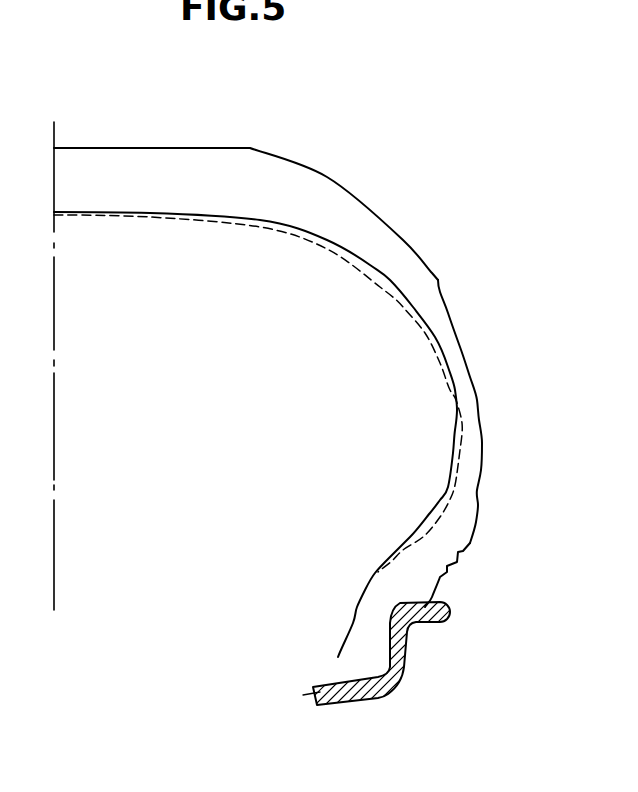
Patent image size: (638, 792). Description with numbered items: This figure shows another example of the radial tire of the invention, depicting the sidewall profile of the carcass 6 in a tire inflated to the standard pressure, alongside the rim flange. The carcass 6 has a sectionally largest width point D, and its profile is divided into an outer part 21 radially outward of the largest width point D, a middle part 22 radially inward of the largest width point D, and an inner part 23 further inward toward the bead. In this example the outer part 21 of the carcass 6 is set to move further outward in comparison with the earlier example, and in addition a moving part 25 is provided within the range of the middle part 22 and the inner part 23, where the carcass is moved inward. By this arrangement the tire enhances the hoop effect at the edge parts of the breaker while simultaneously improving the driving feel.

The carcass 6 is at (370, 265).
The outer part 21 is at (418, 278).
The middle part 22 is at (448, 482).
The inner part 23 is at (365, 590).
The moving part 25 is at (432, 510).
The sectionally largest width point D is at (455, 397).